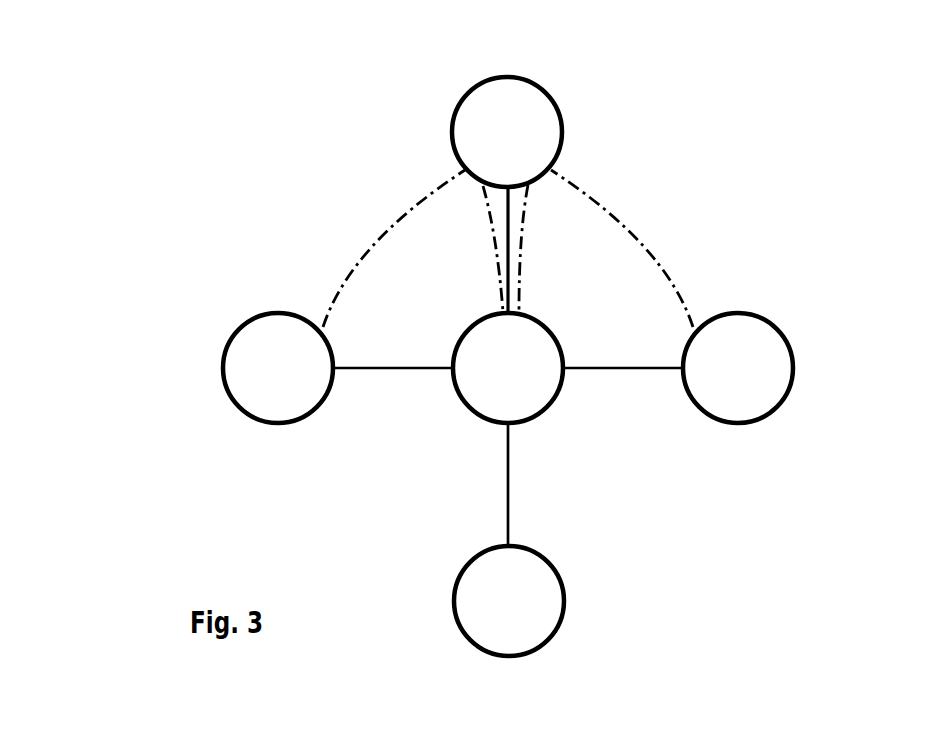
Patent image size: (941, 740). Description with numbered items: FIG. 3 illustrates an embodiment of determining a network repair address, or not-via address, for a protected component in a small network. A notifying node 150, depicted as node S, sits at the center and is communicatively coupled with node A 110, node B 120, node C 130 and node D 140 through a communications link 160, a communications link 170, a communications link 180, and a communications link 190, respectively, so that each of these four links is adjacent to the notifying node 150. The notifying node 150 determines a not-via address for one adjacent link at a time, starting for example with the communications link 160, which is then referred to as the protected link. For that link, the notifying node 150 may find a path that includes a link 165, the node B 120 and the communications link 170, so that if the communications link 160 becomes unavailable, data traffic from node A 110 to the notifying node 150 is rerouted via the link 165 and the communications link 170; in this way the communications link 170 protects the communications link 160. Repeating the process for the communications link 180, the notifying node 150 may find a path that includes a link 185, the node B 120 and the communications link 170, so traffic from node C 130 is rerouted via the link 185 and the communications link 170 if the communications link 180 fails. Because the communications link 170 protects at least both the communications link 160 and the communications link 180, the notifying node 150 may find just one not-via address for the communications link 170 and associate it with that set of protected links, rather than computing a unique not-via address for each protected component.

The node A 110 is at (223, 363).
The node B 120 is at (552, 95).
The node C 130 is at (793, 358).
The node D 140 is at (567, 602).
The notifying node 150 is at (470, 407).
The communications link 160 is at (392, 363).
The link 165 is at (383, 238).
The communications link 170 is at (510, 257).
The communications link 180 is at (610, 363).
The link 185 is at (647, 250).
The communications link 190 is at (508, 485).